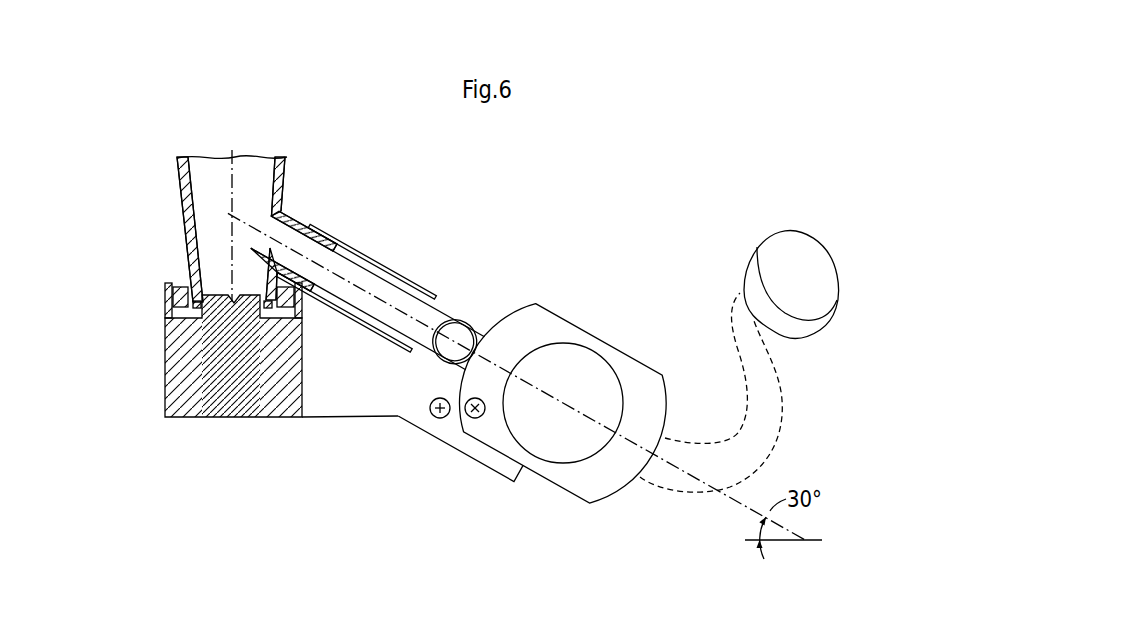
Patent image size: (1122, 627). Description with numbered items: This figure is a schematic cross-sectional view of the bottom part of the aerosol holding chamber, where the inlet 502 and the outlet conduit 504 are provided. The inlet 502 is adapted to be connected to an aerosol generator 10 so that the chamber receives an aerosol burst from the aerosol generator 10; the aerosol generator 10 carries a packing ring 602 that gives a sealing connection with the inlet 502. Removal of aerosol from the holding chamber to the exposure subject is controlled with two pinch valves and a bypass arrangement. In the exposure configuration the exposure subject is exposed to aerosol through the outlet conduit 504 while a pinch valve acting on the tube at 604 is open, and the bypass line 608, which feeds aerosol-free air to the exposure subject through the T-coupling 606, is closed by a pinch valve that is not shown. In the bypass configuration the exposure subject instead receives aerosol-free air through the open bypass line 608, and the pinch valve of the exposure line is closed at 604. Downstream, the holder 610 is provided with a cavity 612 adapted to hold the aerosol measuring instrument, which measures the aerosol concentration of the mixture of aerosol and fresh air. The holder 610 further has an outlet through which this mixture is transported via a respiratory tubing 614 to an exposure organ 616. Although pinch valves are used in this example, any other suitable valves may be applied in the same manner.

The aerosol generator 10 is at (238, 410).
The inlet 502 is at (220, 296).
The outlet conduit 504 is at (284, 216).
The packing ring 602 is at (185, 323).
The pinch valve location on tube 604 is at (375, 254).
The T-coupling 606 is at (441, 322).
The bypass line 608 is at (474, 325).
The holder 610 is at (573, 325).
The cavity 612 is at (598, 380).
The respiratory tubing 614 is at (770, 421).
The exposure organ 616 is at (783, 247).